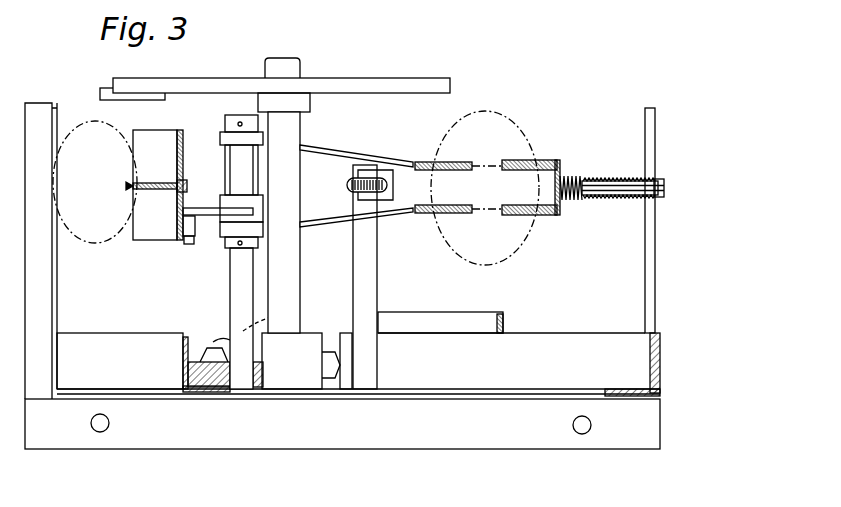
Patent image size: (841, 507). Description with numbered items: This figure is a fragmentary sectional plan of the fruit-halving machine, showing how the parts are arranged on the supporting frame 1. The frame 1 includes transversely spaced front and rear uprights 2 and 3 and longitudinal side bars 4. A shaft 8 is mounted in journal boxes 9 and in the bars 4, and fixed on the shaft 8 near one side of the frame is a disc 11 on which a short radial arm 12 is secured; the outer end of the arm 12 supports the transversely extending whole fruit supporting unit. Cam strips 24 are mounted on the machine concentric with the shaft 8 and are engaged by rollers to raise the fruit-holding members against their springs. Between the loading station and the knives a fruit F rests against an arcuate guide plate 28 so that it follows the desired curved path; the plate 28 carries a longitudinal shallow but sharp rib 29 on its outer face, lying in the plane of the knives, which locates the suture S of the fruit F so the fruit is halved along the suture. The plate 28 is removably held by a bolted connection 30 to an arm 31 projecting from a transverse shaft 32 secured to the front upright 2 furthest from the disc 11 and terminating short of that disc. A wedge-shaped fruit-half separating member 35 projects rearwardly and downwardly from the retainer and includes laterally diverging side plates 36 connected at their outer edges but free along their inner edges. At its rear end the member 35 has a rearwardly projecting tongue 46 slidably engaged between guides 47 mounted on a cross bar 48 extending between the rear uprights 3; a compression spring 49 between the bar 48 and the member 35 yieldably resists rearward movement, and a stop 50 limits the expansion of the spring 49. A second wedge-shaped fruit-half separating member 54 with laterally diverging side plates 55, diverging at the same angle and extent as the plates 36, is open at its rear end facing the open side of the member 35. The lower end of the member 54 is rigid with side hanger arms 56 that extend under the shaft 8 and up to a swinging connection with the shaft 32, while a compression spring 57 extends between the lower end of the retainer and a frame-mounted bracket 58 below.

The supporting frame 1 is at (428, 453).
The front upright 2 is at (99, 355).
The rear upright 3 is at (664, 358).
The longitudinal side bar 4 is at (508, 374).
The shaft 8 is at (288, 283).
The journal box 9 is at (293, 378).
The disc 11 is at (333, 83).
The short radial arm 12 is at (149, 96).
The cam strip 24 is at (436, 322).
The arcuate guide plate 28 is at (162, 138).
The rib 29 is at (158, 193).
The bolted connection 30 is at (190, 246).
The arm 31 is at (200, 210).
The transverse shaft 32 is at (235, 285).
The wedge-shaped fruit-half separating member 35 is at (561, 168).
The side plate 36 is at (538, 162).
The tongue 46 is at (594, 186).
The guide 47 is at (622, 186).
The cross bar 48 is at (660, 266).
The compression spring 49 is at (572, 197).
The stop 50 is at (662, 180).
The wedge-shaped fruit-half separating member 54 is at (463, 217).
The side plate 55 is at (452, 164).
The side hanger arm 56 is at (334, 147).
The compression spring 57 is at (352, 182).
The bracket 58 is at (394, 190).
The fabric F is at (85, 244).
The suture S is at (131, 187).